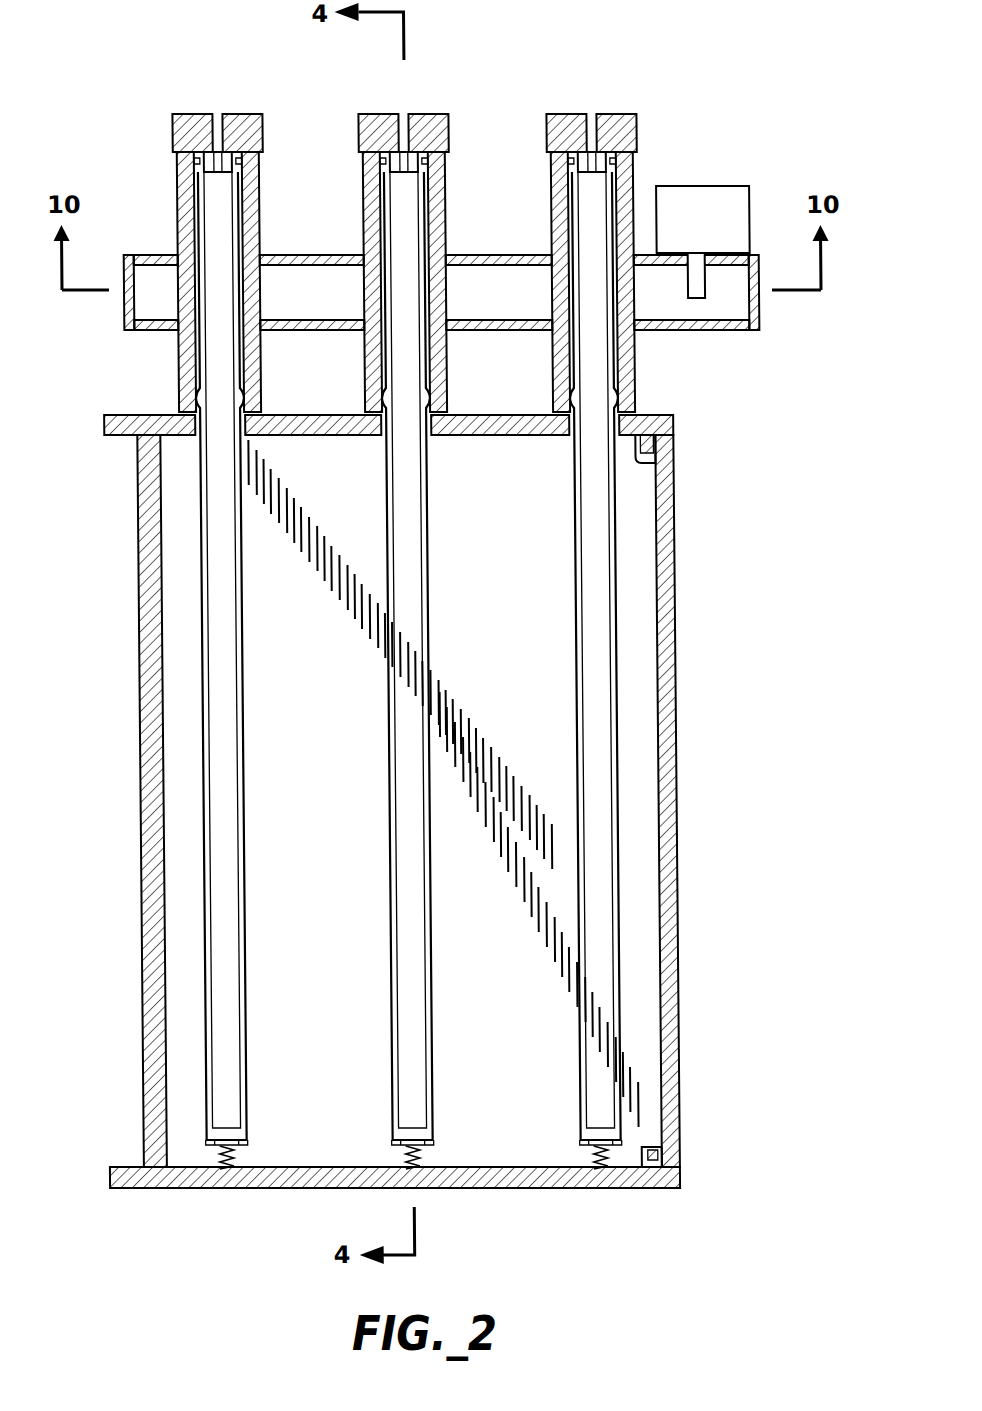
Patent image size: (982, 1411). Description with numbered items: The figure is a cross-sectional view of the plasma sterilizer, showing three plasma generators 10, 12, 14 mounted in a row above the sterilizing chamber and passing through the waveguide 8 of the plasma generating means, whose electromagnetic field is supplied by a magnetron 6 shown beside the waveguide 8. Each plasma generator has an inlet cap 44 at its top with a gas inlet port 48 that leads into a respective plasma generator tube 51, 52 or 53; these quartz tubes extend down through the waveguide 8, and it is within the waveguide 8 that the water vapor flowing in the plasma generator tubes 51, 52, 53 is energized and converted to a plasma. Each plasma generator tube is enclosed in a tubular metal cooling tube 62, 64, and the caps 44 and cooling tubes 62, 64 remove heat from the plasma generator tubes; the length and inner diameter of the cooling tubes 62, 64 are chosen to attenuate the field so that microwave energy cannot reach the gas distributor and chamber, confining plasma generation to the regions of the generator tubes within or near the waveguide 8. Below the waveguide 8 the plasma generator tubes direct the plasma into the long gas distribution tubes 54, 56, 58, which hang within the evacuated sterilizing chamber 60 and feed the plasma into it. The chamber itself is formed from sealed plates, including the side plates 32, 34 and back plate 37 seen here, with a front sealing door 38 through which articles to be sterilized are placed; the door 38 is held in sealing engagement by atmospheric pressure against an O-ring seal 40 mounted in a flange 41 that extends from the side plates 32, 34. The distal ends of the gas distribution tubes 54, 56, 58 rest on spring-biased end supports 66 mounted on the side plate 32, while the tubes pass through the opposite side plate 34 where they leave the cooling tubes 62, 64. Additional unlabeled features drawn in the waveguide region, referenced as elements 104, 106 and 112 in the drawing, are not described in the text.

The magnetron 6 is at (700, 186).
The waveguide 8 is at (752, 332).
The plasma generating tube 10 is at (268, 642).
The plasma generating tube 12 is at (391, 656).
The plasma generating tube 14 is at (546, 655).
The side plate 32 is at (600, 1188).
The side plate 34 is at (660, 415).
The back plate 37 is at (137, 660).
The front sealing door 38 is at (673, 660).
The O-ring seal 40 is at (650, 435).
The flange 41 is at (657, 458).
The inlet cap 44 is at (174, 130).
The gas inlet port 48 is at (216, 114).
The plasma generator tube 51 is at (208, 356).
The plasma generator tube 52 is at (412, 357).
The plasma generator tube 53 is at (602, 357).
The gas distribution tube 54 is at (241, 660).
The gas distribution tube 56 is at (427, 660).
The gas distribution tube 58 is at (573, 705).
The evacuated sterilizing chamber 60 is at (558, 835).
The cooling tube 62 is at (177, 235).
The cooling tube 64 is at (262, 395).
The spring-biased end support 66 is at (228, 1157).
The manifold upper wall 104 is at (352, 256).
The manifold lower wall 106 is at (345, 332).
The port stub 112 is at (706, 290).